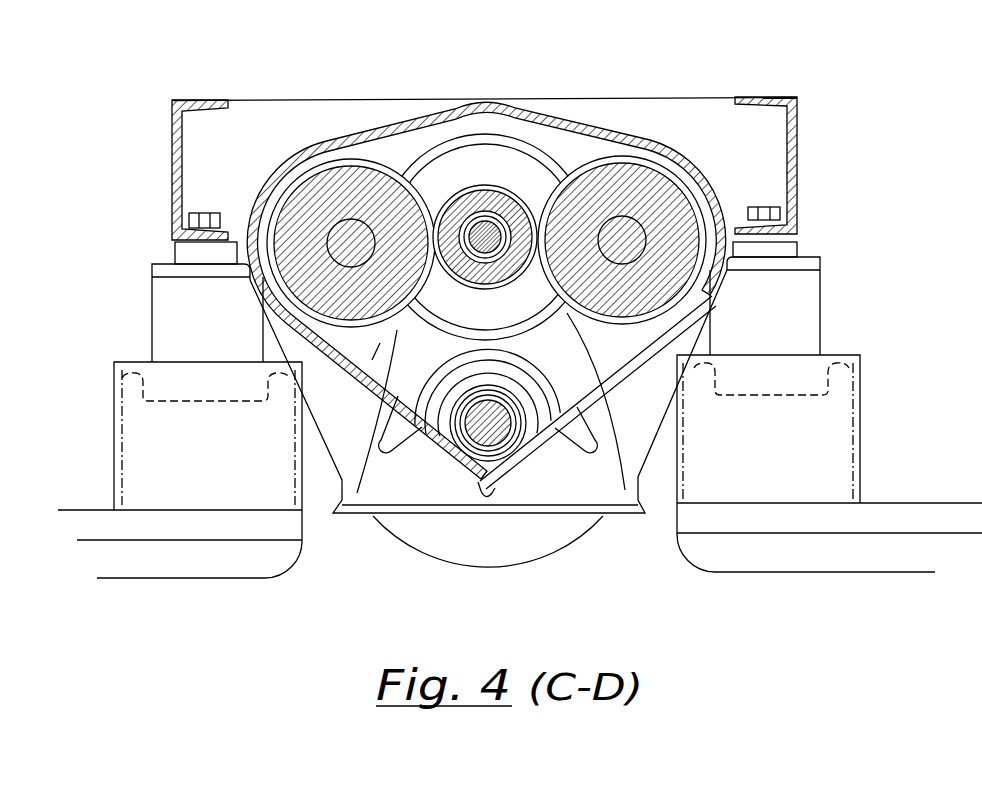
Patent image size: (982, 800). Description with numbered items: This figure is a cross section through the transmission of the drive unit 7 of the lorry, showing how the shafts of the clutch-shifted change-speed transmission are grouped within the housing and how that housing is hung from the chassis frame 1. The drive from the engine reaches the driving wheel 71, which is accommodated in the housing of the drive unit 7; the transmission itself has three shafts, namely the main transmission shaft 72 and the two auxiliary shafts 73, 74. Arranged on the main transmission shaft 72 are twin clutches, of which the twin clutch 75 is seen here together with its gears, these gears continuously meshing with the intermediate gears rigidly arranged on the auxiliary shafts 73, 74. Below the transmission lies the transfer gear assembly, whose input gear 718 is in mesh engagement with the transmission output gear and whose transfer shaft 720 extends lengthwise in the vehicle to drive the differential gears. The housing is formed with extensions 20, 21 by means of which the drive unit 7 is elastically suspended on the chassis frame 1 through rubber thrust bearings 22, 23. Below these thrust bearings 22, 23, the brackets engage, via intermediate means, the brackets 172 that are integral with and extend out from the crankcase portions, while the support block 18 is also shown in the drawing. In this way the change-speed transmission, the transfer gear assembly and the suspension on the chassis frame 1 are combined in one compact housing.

The chassis frame 1 is at (172, 124).
The drive unit 7 is at (567, 137).
The driving wheel 71 is at (460, 200).
The main transmission shaft 72 is at (486, 222).
The auxiliary shaft 73 is at (354, 243).
The auxiliary shaft 74 is at (621, 236).
The twin clutch 75 is at (427, 168).
The input gear of the transfer gear assembly 718 is at (405, 307).
The transfer shaft 720 is at (487, 424).
The support block 18 is at (776, 370).
The extension 20 is at (158, 272).
The extension 21 is at (820, 264).
The rubber thrust bearing 22 is at (180, 257).
The rubber thrust bearing 23 is at (790, 250).
The bracket 172 is at (802, 525).